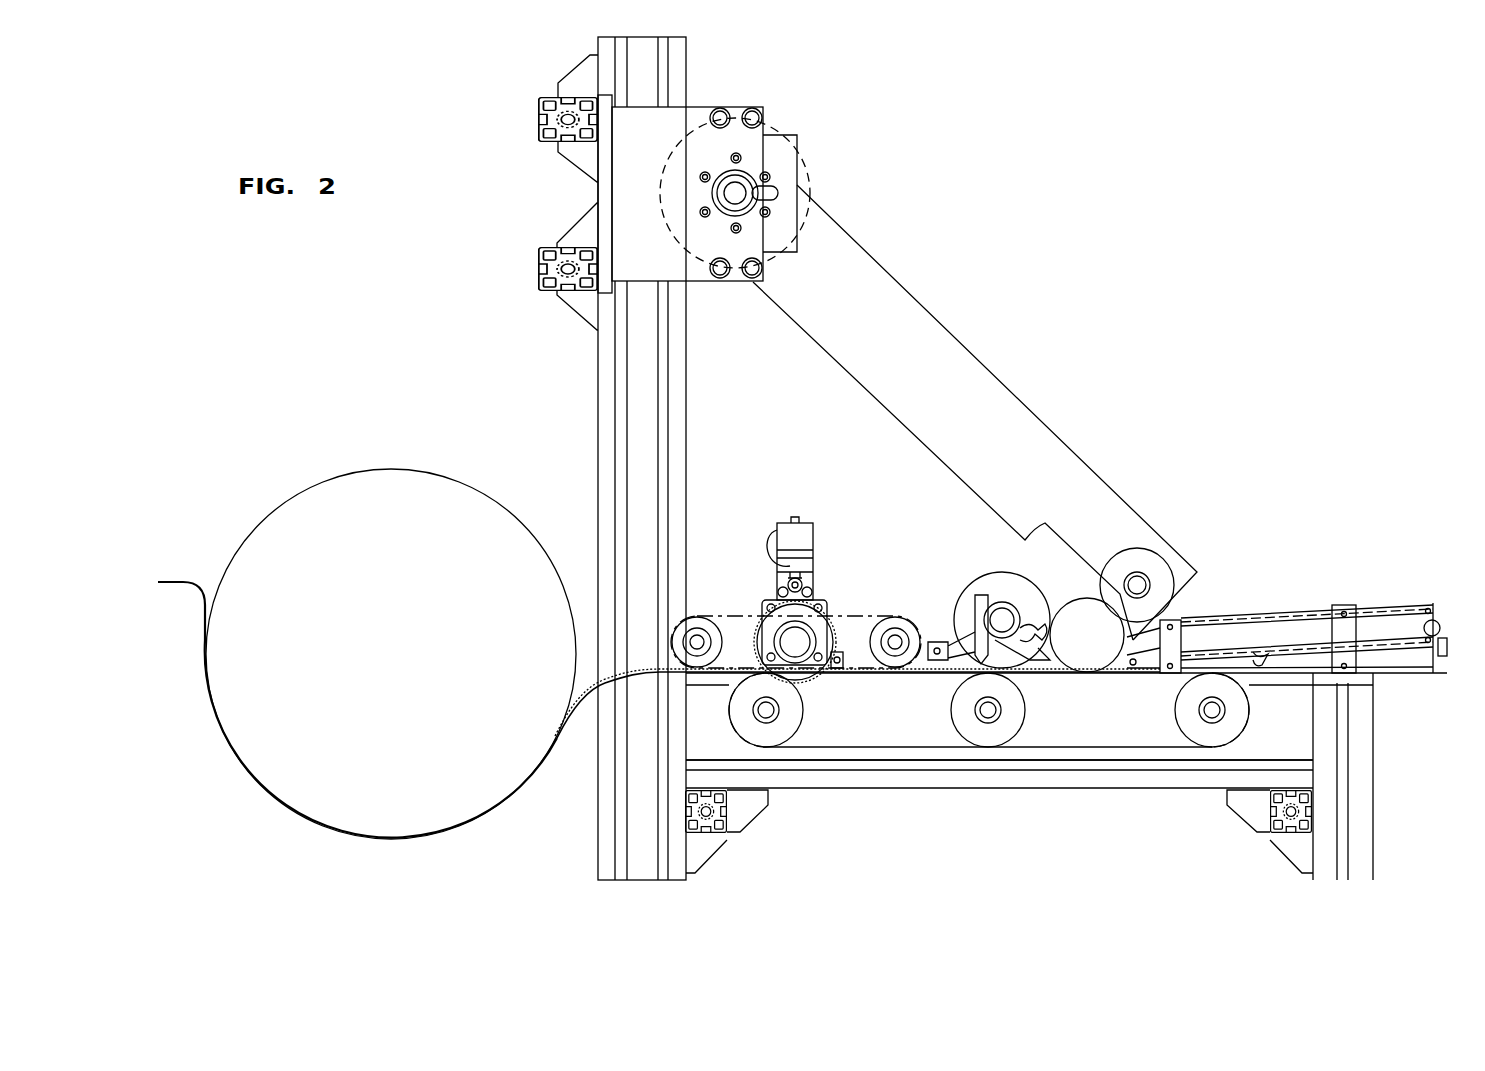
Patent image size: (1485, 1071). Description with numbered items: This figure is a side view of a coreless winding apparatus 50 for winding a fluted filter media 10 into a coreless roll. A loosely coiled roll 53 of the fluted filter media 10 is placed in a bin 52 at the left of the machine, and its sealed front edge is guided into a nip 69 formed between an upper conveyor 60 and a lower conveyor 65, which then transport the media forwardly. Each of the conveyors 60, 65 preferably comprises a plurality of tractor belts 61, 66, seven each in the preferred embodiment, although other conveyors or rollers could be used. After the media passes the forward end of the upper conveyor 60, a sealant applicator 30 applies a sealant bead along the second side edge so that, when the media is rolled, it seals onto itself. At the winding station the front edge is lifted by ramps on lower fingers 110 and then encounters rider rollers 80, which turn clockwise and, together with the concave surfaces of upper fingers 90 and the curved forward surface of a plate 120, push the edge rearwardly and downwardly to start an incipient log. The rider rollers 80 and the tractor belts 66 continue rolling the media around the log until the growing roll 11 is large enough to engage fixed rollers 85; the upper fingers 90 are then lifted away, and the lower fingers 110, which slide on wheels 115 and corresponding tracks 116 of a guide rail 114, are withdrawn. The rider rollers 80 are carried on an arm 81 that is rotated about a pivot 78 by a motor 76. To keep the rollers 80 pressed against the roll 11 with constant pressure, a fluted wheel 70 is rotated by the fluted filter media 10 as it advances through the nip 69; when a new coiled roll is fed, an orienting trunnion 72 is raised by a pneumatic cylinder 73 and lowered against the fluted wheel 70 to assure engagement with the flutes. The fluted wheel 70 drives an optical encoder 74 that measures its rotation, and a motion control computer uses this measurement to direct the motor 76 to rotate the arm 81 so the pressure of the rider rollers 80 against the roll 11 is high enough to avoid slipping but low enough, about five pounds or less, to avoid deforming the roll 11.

The fluted filter media 10 is at (590, 687).
The roll 11 is at (1127, 640).
The sealant applicator 30 is at (980, 605).
The coreless winding apparatus 50 is at (1137, 418).
The bin 52 is at (183, 584).
The loosely coiled roll 53 is at (358, 468).
The upper conveyor 60 is at (890, 612).
The tractor belts 61 is at (732, 612).
The lower conveyor 65 is at (1027, 748).
The tractor belts 66 is at (1127, 745).
The nip 69 is at (735, 680).
The fluted wheel 70 is at (760, 612).
The orienting trunnion 72 is at (807, 593).
The pneumatic cylinder 73 is at (790, 566).
The optical encoder 74 is at (800, 522).
The motor 76 is at (778, 125).
The pivot 78 is at (765, 183).
The rider rollers 80 is at (1165, 562).
The arm 81 is at (1020, 401).
The fixed rollers 85 is at (1020, 588).
The upper fingers 90 is at (1018, 643).
The lower fingers 110 is at (1267, 660).
The guide rail 114 is at (1345, 603).
The wheels 115 is at (1434, 640).
The tracks 116 is at (1414, 635).
The plate 120 is at (1035, 658).